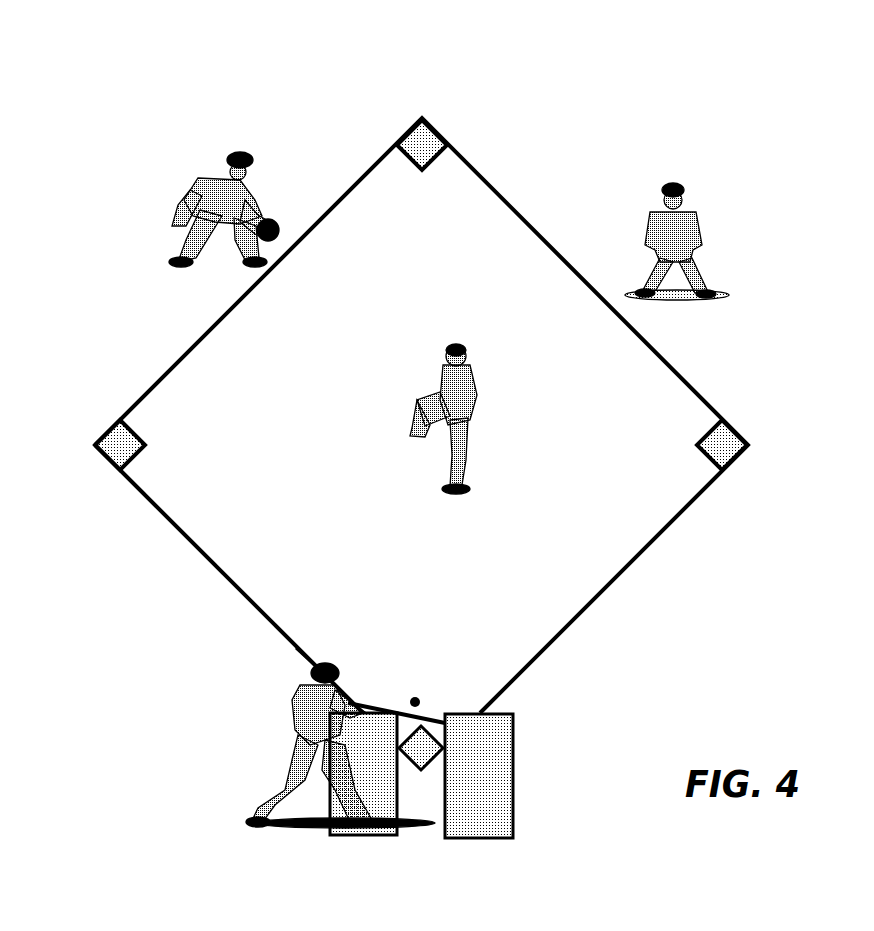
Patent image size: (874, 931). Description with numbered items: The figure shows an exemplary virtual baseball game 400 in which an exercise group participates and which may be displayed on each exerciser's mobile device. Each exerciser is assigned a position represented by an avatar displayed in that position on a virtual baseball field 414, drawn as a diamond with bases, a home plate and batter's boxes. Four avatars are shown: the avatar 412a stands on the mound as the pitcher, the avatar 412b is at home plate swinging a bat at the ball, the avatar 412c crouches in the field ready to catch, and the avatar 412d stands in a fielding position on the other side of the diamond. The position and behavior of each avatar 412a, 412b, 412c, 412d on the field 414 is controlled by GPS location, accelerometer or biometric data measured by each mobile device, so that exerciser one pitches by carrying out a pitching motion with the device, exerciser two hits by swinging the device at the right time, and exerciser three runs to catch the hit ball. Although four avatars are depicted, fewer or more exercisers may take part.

The virtual baseball game 400 is at (605, 100).
The avatar 412a is at (475, 397).
The avatar 412b is at (297, 693).
The avatar 412c is at (190, 190).
The avatar 412d is at (700, 225).
The virtual baseball field 414 is at (190, 541).